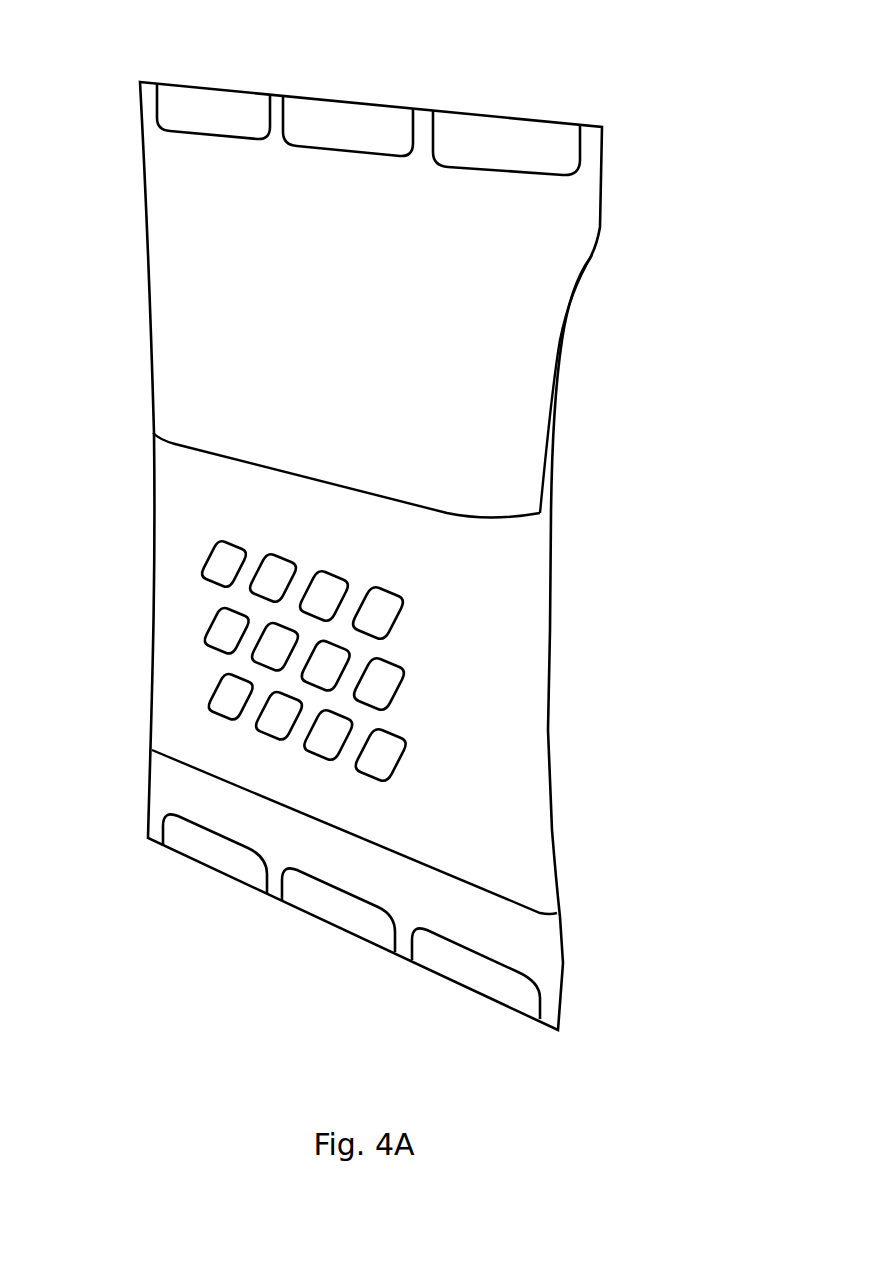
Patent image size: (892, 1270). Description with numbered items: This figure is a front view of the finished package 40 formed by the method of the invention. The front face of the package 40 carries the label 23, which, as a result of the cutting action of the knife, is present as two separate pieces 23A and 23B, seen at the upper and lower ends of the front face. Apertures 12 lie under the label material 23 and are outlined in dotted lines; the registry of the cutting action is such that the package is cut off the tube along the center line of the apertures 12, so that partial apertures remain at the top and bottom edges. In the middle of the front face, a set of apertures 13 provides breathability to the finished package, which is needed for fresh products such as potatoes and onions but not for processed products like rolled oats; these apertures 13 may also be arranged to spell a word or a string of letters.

The apertures 12 is at (200, 112).
The apertures 13 is at (378, 765).
The label 23 is at (418, 328).
The label piece 23A is at (547, 973).
The label piece 23B is at (495, 402).
The finished package 40 is at (633, 587).